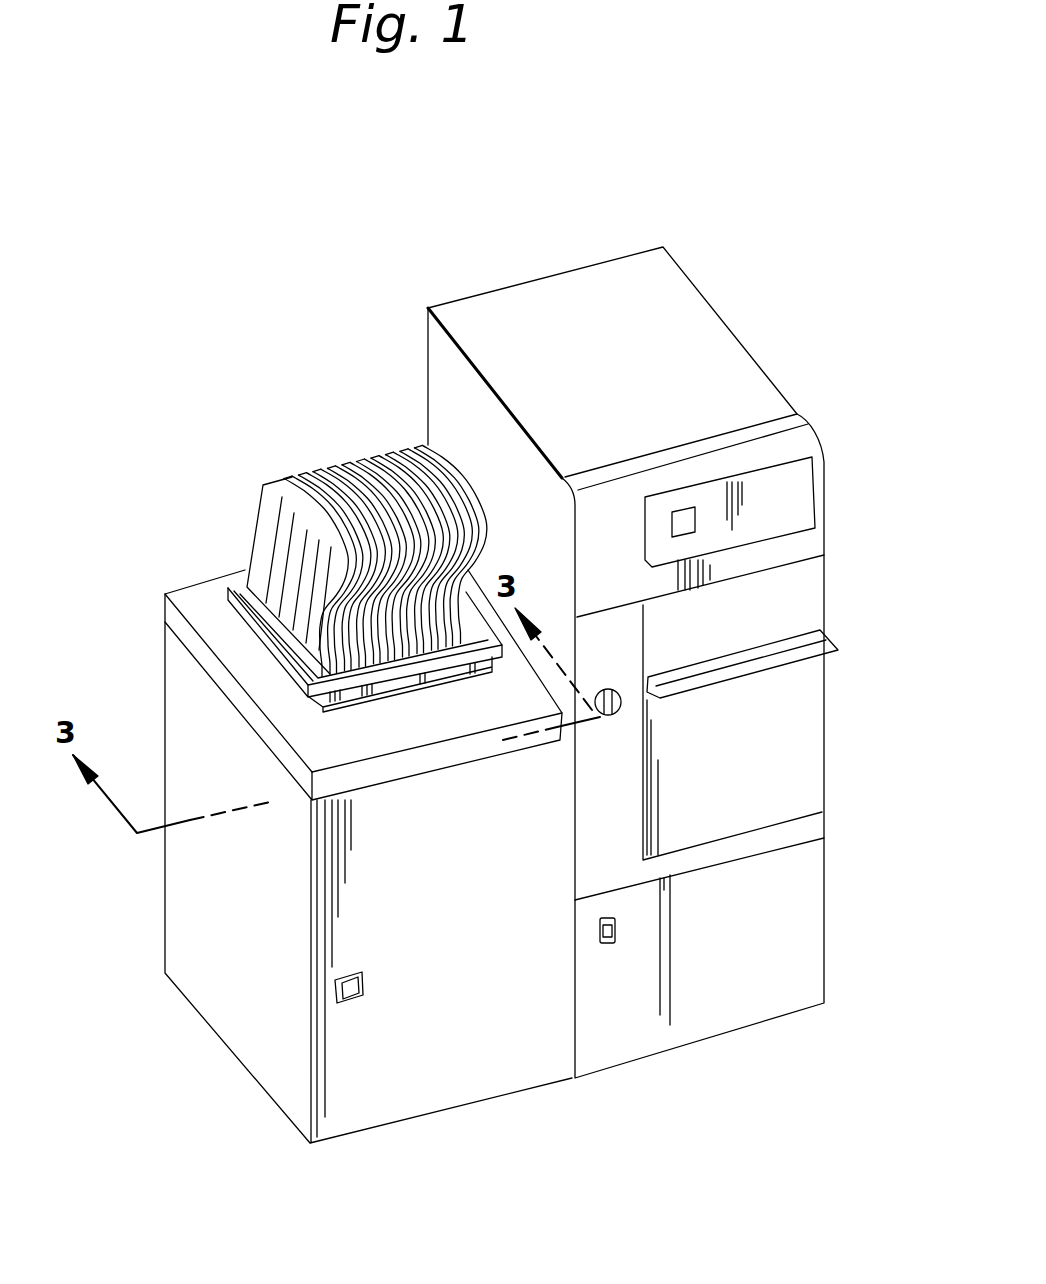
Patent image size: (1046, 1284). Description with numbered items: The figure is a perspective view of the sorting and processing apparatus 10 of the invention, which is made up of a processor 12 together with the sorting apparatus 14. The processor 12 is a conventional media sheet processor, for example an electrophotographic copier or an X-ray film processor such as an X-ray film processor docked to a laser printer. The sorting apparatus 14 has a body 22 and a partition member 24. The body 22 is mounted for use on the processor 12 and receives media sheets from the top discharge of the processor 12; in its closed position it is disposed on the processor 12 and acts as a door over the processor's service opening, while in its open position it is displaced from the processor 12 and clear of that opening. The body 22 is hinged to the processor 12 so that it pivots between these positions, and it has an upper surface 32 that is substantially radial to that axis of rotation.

The sorting and processing apparatus 10 is at (397, 226).
The processor 12 is at (598, 1112).
The sorting apparatus 14 is at (160, 562).
The body 22 is at (167, 610).
The partition member 24 is at (327, 468).
The upper surface 32 is at (227, 633).